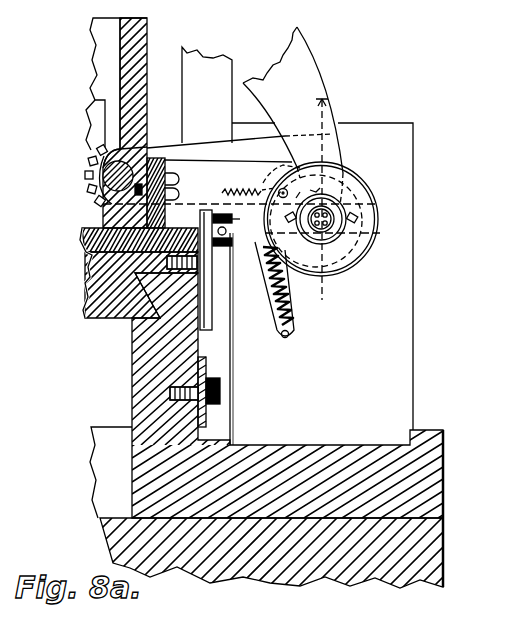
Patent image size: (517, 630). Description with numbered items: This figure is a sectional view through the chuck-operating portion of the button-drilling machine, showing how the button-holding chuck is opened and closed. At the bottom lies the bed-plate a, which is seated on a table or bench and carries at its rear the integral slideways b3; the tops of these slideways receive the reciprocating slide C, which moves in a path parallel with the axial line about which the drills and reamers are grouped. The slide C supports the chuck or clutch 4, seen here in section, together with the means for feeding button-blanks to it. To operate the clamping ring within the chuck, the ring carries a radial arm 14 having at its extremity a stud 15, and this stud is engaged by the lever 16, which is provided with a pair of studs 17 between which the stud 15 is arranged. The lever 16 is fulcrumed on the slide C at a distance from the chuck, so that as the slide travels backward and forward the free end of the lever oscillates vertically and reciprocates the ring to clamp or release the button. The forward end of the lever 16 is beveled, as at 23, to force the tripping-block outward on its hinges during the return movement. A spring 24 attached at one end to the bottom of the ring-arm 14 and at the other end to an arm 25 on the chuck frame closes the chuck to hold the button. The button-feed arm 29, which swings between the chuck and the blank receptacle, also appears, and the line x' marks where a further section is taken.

The chuck or clutch 4 is at (369, 184).
The radial arm 14 is at (266, 289).
The stud 15 is at (262, 205).
The lever 16 is at (204, 205).
The studs 17 is at (223, 339).
The beveled forward end 23 is at (207, 298).
The spring 24 is at (290, 294).
The arm 25 is at (270, 310).
The button-feed arm 29 is at (240, 148).
The section line x' is at (326, 217).
The reciprocating slide C is at (85, 284).
The slideways b3 is at (140, 355).
The bed-plate a is at (435, 556).